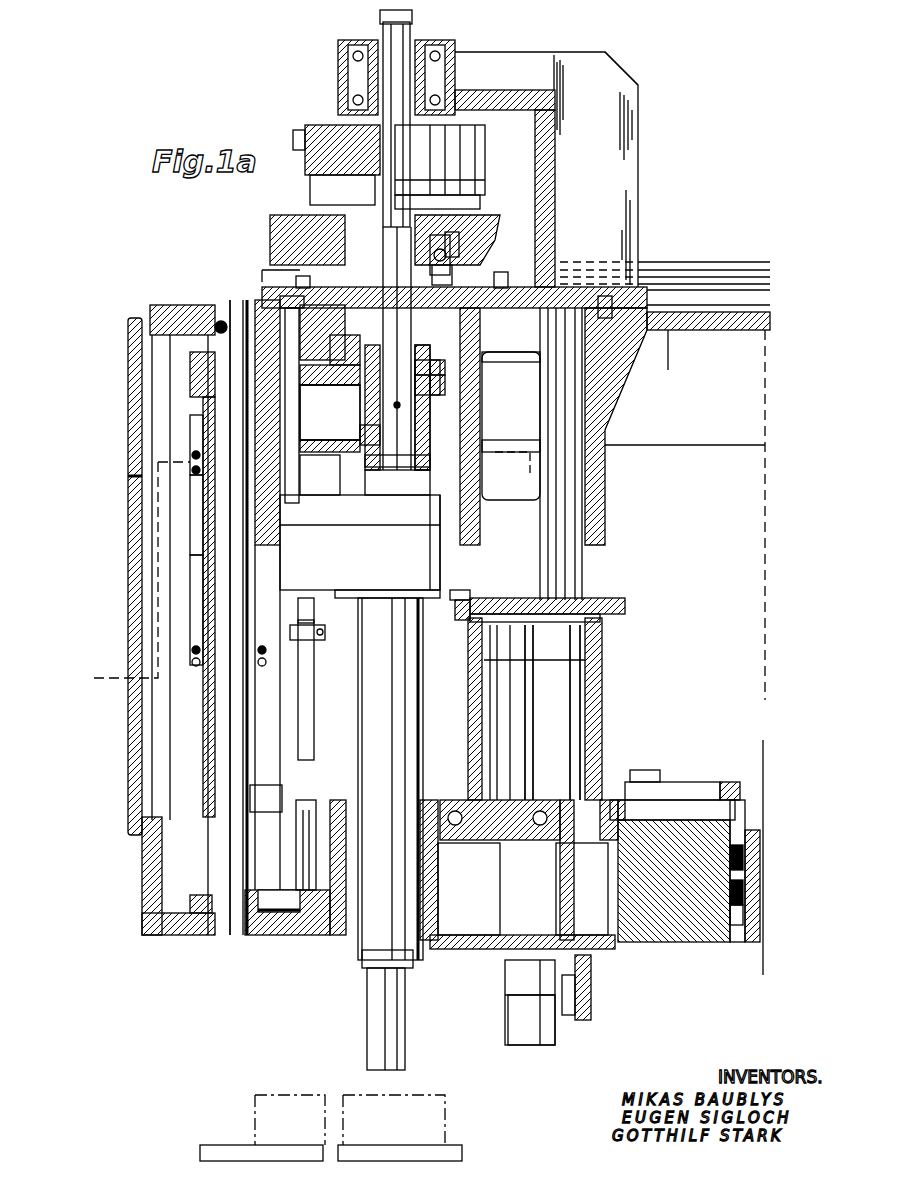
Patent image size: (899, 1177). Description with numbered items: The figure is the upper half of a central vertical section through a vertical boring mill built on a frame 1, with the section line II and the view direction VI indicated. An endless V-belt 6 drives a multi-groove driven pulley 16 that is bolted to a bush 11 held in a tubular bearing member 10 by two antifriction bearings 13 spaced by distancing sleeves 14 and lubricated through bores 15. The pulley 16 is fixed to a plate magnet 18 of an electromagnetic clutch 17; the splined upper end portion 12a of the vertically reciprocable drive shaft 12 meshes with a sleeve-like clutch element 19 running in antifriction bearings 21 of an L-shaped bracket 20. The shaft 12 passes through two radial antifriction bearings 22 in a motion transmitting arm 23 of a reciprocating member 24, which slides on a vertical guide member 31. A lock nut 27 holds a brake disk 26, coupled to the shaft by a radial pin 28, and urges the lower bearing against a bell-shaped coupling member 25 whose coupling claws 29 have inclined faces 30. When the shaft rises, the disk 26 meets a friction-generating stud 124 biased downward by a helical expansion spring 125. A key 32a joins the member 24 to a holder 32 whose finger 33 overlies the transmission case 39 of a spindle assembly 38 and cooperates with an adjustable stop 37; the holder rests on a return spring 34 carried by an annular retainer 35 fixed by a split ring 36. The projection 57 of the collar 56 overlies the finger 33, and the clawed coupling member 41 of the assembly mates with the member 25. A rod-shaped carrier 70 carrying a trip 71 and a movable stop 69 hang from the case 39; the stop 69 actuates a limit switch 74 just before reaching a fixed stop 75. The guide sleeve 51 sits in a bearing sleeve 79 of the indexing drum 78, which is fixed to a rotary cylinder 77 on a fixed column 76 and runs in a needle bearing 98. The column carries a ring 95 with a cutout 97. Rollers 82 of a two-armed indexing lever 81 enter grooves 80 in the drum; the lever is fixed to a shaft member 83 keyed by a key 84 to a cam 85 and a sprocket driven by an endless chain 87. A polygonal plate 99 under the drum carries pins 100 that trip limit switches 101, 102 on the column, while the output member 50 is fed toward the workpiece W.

The upper end portion 12a is at (410, 28).
The clutch element 19 is at (412, 40).
The antifriction bearings 21 is at (440, 80).
The L-shaped bracket 20 is at (603, 65).
The plate magnet 18 is at (483, 188).
The electromagnetic clutch 17 is at (490, 163).
The tubular bearing member 10 is at (320, 248).
The drive shaft 12 is at (290, 240).
The bush 11 is at (470, 232).
The antifriction bearings 13 is at (475, 248).
The helical expansion spring 125 is at (467, 246).
The distancing sleeves 14 is at (452, 275).
The driven pulley 16 is at (520, 270).
The V-belt 6 is at (706, 275).
The stop 37 is at (270, 300).
The bores 15 is at (280, 300).
The lock nut 27 is at (342, 350).
The reciprocating member 24 is at (190, 375).
The motion transmitting arm 23 is at (330, 412).
The friction-generating stud 124 is at (511, 360).
The brake disk 26 is at (445, 368).
The radial antifriction bearings 22 is at (445, 385).
The radial pin 28 is at (460, 365).
The coupling member 25 is at (430, 418).
The coupling claws 29 is at (482, 442).
The key 32a is at (190, 452).
The projection 57 is at (360, 445).
The inclined faces 30 is at (400, 462).
The coupling member 41 is at (430, 470).
The collar 56 is at (430, 486).
The holder 32 is at (190, 510).
The finger 33 is at (322, 485).
The transmission case 39 is at (380, 564).
The frame 1 is at (610, 505).
The return spring 34 is at (190, 598).
The movable stop 69 is at (314, 615).
The cutout 97 is at (455, 600).
The ring 95 is at (468, 620).
The trip 71 is at (325, 636).
The split ring 36 is at (196, 668).
The annular retainer 35 is at (265, 668).
The carrier 70 is at (314, 694).
The guide sleeve 51 is at (412, 690).
The guide member 31 is at (241, 730).
The spindle assembly 38 is at (433, 735).
The column 76 is at (555, 712).
The rotary cylinder 77 is at (595, 740).
The shaft member 83 is at (735, 790).
The indexing lever 81 is at (705, 785).
The key 84 is at (745, 790).
The limit switch 74 is at (268, 790).
The fixed stop 75 is at (310, 810).
The rollers 82 is at (629, 821).
The grooves 80 is at (680, 820).
The indexing drum 78 is at (660, 935).
The cam 85 is at (730, 855).
The endless chain 87 is at (730, 892).
The needle bearing 98 is at (730, 915).
The bearing sleeves 79 is at (413, 958).
The polygonal plate 99 is at (598, 987).
The pins 100 is at (590, 968).
The limit switch 101 is at (520, 979).
The limit switch 102 is at (518, 1030).
The output member 50 is at (405, 1035).
The workpiece W is at (459, 1115).
The section line II is at (88, 700).
The section line VI is at (583, 1028).